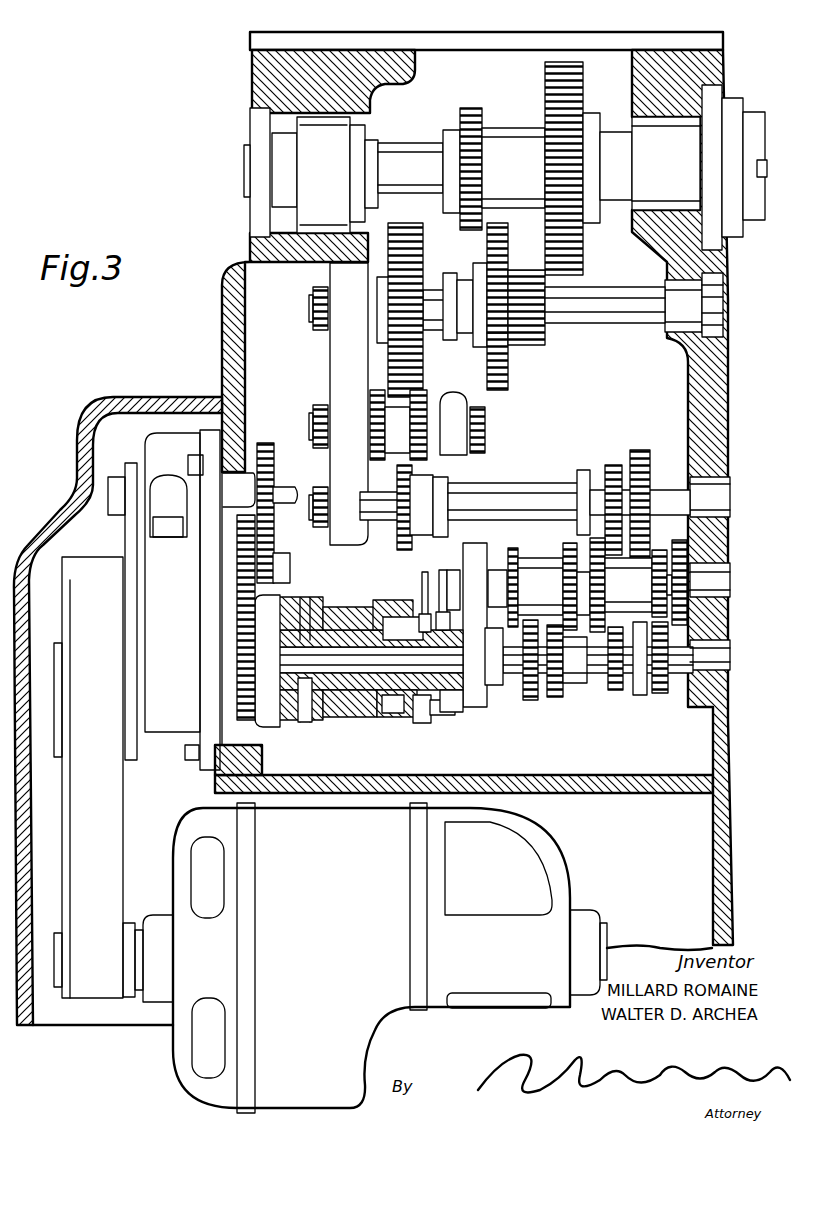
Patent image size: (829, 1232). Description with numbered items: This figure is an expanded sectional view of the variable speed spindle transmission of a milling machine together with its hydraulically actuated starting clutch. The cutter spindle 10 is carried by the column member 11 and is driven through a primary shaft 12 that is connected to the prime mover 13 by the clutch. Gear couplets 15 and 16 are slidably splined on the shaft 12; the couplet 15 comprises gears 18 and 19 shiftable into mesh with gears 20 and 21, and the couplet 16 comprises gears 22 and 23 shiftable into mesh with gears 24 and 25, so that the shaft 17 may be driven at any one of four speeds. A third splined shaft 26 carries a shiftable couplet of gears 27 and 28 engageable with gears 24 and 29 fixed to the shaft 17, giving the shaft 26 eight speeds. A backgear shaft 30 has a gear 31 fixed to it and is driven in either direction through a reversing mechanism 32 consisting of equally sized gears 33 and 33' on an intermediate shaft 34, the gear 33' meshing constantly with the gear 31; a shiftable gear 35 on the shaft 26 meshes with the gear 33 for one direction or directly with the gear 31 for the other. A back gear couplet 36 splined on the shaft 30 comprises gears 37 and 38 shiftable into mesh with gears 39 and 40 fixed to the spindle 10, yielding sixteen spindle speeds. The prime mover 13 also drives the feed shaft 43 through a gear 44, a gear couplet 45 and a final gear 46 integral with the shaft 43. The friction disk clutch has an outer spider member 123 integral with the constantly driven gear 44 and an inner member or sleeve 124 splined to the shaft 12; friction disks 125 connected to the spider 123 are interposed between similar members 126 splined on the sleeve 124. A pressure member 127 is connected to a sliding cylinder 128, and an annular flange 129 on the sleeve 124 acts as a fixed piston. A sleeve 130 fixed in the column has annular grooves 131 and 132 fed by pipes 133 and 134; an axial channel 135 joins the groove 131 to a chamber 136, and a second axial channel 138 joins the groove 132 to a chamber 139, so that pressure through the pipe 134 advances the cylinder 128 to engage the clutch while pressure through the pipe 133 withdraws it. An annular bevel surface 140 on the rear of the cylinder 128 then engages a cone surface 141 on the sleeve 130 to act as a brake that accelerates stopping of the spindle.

The cutter spindle 10 is at (676, 135).
The column member 11 is at (262, 112).
The primary shaft 12 is at (512, 676).
The prime mover 13 is at (530, 832).
The gear couplet 15 is at (542, 678).
The gear couplet 16 is at (632, 682).
The shaft 17 is at (496, 582).
The gear 18 is at (532, 701).
The gear 19 is at (558, 698).
The gear 20 is at (513, 548).
The gear 21 is at (568, 546).
The gear 22 is at (614, 692).
The gear 23 is at (660, 694).
The gear 24 is at (605, 555).
The gear 25 is at (682, 548).
The third splined shaft 26 is at (513, 502).
The gear 27 is at (612, 462).
The gear 28 is at (640, 448).
The gear 29 is at (658, 552).
The backgear shaft 30 is at (617, 310).
The gear 31 is at (424, 363).
The reversing mechanism 32 is at (402, 432).
The gear 33 is at (332, 404).
The gear 33' is at (442, 413).
The shaft 34 is at (466, 405).
The shiftable gear 35 is at (398, 552).
The back gear couplet 36 is at (510, 367).
The gear 37 is at (510, 386).
The gear 38 is at (541, 344).
The gear 39 is at (472, 108).
The gear 40 is at (545, 86).
The shaft 43 is at (290, 490).
The gear 44 is at (247, 720).
The gear couplet 45 is at (284, 583).
The final gear 46 is at (268, 443).
The outer spider member 123 is at (272, 728).
The inner member 124 is at (345, 717).
The friction disks 125 is at (296, 722).
The friction members 126 is at (295, 600).
The pressure member 127 is at (326, 608).
The sliding cylinder 128 is at (372, 717).
The annular flange 129 is at (392, 718).
The sleeve 130 is at (460, 704).
The annular groove 131 is at (445, 690).
The annular groove 132 is at (452, 692).
The pipe 133 is at (423, 583).
The pipe 134 is at (432, 580).
The axial channel 135 is at (408, 610).
The chamber 136 is at (385, 615).
The axial channel 138 is at (438, 655).
The chamber 139 is at (358, 720).
The annular bevel surface 140 is at (408, 716).
The cone surface 141 is at (428, 714).